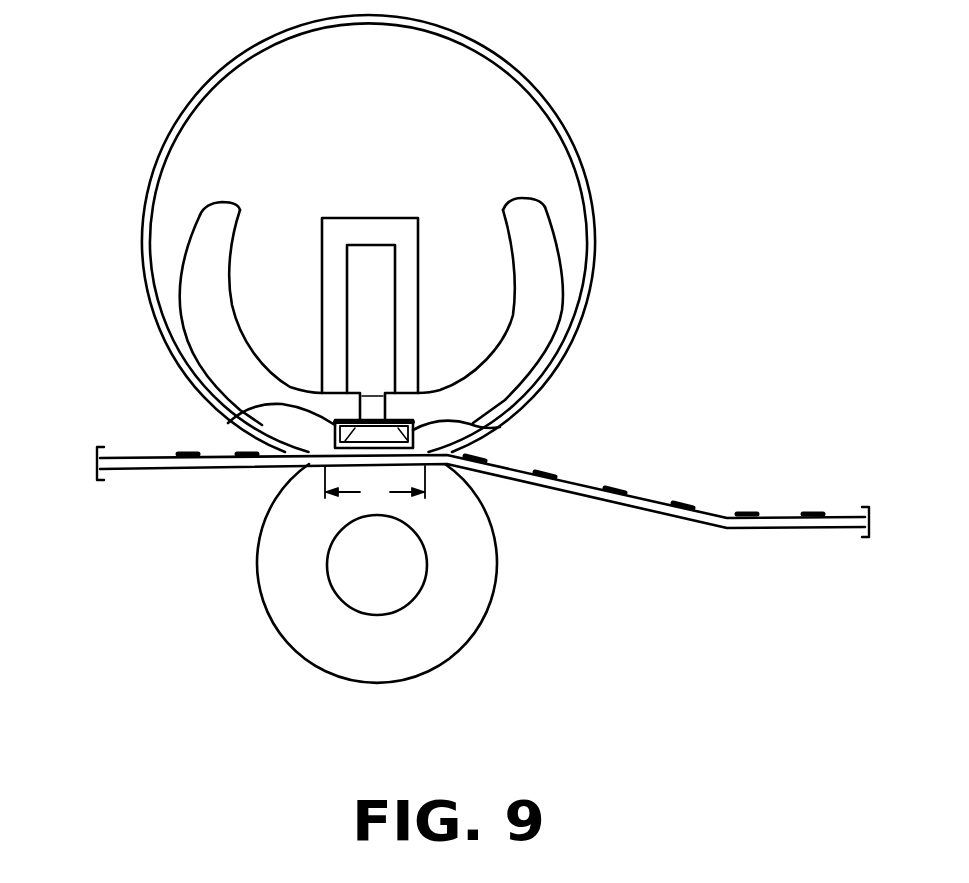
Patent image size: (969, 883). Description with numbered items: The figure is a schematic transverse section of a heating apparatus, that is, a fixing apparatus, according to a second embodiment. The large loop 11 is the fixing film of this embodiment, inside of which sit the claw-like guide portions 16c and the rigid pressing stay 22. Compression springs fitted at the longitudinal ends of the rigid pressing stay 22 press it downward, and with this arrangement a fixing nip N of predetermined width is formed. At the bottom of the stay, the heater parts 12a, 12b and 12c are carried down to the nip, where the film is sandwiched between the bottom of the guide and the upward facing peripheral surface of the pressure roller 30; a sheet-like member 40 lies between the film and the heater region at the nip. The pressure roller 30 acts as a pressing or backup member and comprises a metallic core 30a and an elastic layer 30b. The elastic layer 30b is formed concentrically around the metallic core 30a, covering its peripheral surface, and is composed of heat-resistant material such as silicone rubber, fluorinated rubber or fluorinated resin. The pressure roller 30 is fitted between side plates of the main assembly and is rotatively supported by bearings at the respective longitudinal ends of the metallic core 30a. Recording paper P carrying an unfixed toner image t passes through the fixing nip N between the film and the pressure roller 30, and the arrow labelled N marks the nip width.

The fixing belt 11 is at (533, 82).
The belt guide claws 16c is at (535, 228).
The rigid pressing stay 22 is at (366, 217).
The heater substrate 12a is at (500, 427).
The heat generating resistor layer 12b is at (350, 420).
The heater connecting portion 12c is at (363, 420).
The sliding sheet 40 is at (258, 410).
The pressure roller 30 is at (370, 683).
The metallic core 30a is at (357, 593).
The elastic layer 30b is at (482, 573).
The fixing nip N is at (375, 488).
The toner image t is at (690, 505).
The recording paper P is at (780, 518).